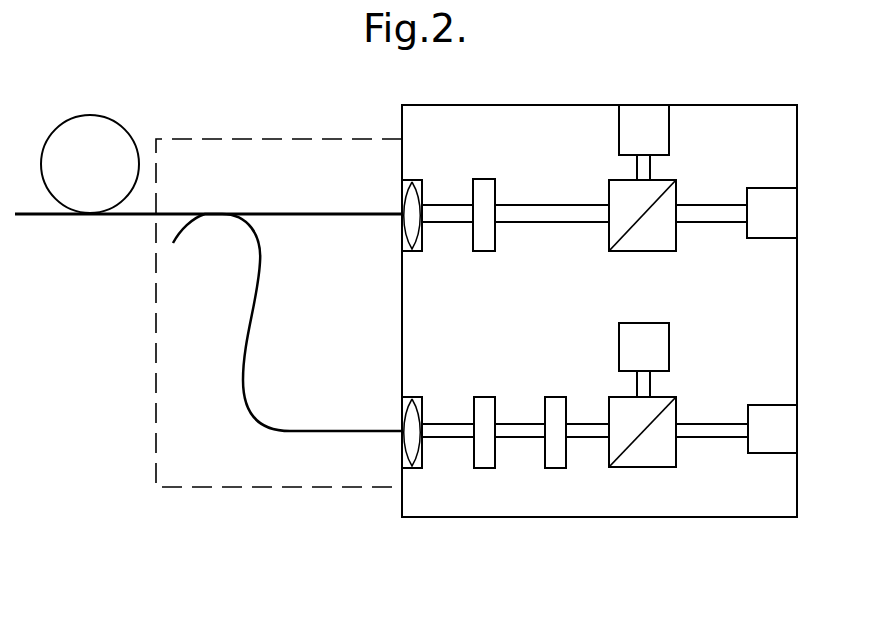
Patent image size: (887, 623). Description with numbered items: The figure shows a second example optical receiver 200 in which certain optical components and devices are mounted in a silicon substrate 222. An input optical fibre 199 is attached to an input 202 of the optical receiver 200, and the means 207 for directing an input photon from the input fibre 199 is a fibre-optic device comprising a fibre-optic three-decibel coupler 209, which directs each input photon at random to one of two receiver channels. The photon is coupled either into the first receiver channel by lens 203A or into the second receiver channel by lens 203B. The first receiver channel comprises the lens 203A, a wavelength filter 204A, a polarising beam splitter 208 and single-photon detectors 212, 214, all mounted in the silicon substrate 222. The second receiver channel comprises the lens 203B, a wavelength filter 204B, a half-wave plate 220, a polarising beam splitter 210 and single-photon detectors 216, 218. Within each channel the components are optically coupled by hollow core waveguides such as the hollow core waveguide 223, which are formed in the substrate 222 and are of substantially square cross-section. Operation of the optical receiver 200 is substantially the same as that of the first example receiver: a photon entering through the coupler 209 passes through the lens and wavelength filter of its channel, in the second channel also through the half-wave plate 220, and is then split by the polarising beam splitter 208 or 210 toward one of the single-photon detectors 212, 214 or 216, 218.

The input optical fibre 199 is at (73, 140).
The input 202 is at (152, 214).
The means for directing an input photon 207 is at (240, 138).
The fibre-optic 3 dB coupler 209 is at (205, 218).
The optical receiver 200 is at (278, 510).
The lens 203A is at (407, 200).
The lens 203B is at (408, 440).
The wavelength filter 204A is at (485, 182).
The wavelength filter 204B is at (485, 462).
The half-wave plate 220 is at (555, 462).
The polarising beam splitter 208 is at (645, 237).
The polarising beam splitter 210 is at (645, 455).
The single-photon detector 214 is at (645, 118).
The single-photon detector 216 is at (645, 325).
The single-photon detector 212 is at (783, 210).
The single-photon detector 218 is at (786, 432).
The silicon substrate 222 is at (777, 346).
The hollow core waveguide 223 is at (708, 208).